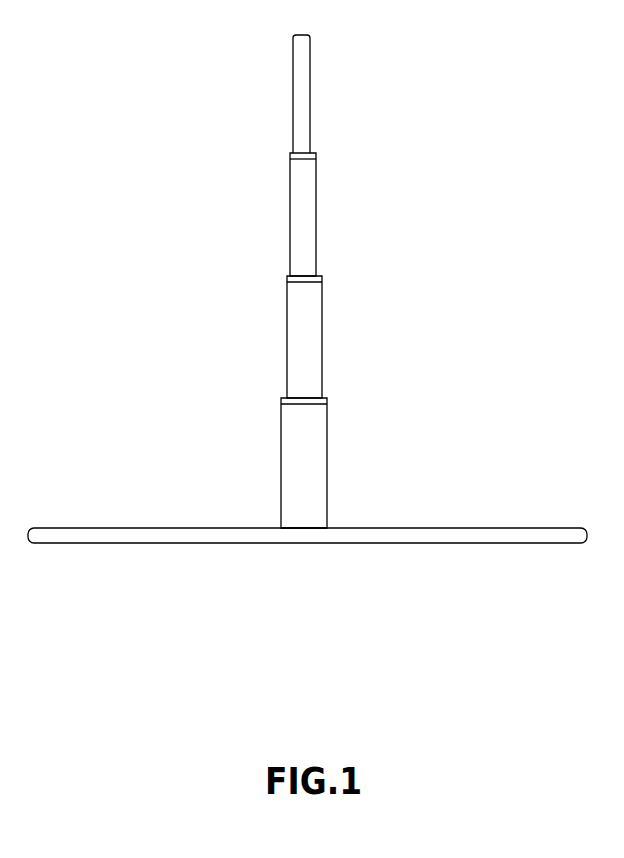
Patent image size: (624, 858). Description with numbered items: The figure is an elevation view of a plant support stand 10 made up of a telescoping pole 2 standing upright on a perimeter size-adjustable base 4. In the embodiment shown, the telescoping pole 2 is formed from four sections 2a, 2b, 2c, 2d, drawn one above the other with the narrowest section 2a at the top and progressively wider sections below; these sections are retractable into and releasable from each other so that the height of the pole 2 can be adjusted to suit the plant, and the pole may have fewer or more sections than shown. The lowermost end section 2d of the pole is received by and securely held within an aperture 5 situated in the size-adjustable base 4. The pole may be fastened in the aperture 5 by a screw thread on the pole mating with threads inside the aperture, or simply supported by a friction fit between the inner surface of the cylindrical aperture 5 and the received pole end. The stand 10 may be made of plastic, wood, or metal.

The plant support stand 10 is at (568, 46).
The telescoping pole 2 is at (318, 240).
The first section of telescoping pole 2a is at (294, 81).
The second section of telescoping pole 2b is at (291, 202).
The third section of telescoping pole 2c is at (288, 337).
The fourth section of telescoping pole 2d is at (282, 462).
The aperture 5 is at (312, 527).
The perimeter size-adjustable base 4 is at (472, 545).